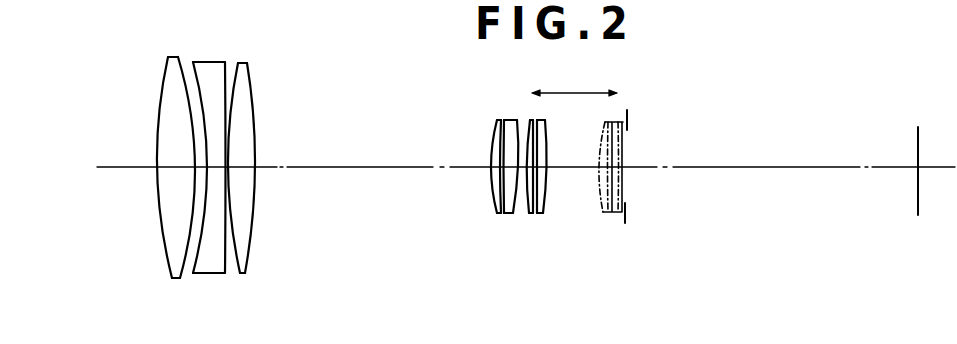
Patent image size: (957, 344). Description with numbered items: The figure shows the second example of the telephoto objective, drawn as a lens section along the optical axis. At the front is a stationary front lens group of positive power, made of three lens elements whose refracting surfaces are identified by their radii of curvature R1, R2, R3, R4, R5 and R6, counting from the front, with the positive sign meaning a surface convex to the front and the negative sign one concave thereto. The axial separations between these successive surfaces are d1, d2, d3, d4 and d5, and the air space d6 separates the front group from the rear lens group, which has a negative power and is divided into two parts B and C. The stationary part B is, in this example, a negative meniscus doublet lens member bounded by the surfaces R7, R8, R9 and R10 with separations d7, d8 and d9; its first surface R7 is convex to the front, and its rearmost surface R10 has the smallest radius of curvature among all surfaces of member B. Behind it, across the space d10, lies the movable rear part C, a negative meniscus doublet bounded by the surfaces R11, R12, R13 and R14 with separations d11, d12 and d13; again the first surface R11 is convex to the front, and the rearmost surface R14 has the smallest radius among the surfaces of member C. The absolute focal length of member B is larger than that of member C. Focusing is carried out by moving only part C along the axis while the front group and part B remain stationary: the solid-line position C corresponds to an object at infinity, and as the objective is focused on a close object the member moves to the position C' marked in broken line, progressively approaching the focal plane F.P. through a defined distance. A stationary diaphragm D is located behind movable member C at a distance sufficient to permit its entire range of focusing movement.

The axial separation d1 is at (180, 167).
The axial separation d2 is at (205, 165).
The axial separation d3 is at (226, 164).
The axial separation d4 is at (227, 166).
The axial separation d5 is at (246, 168).
The axial separation d6 is at (396, 159).
The axial separation d7 is at (491, 167).
The axial separation d8 is at (500, 160).
The axial separation d9 is at (504, 160).
The axial separation d10 is at (518, 160).
The axial separation d11 is at (533, 160).
The axial separation d12 is at (539, 163).
The axial separation d13 is at (543, 167).
The radius of curvature R1 is at (162, 249).
The radius of curvature R2 is at (180, 277).
The radius of curvature R3 is at (193, 271).
The radius of curvature R4 is at (225, 274).
The radius of curvature R5 is at (242, 274).
The radius of curvature R6 is at (252, 258).
The radius of curvature R7 is at (492, 203).
The radius of curvature R8 is at (501, 210).
The radius of curvature R9 is at (504, 214).
The radius of curvature R10 is at (513, 214).
The radius of curvature R11 is at (530, 214).
The radius of curvature R12 is at (534, 212).
The radius of curvature R13 is at (537, 206).
The radius of curvature R14 is at (545, 188).
The stationary part of rear lens group B is at (497, 169).
The movable rear part of rear lens group C is at (555, 171).
The close-object position of movable member C' is at (579, 80).
The diaphragm D is at (625, 220).
The focal plane F.P. is at (918, 127).